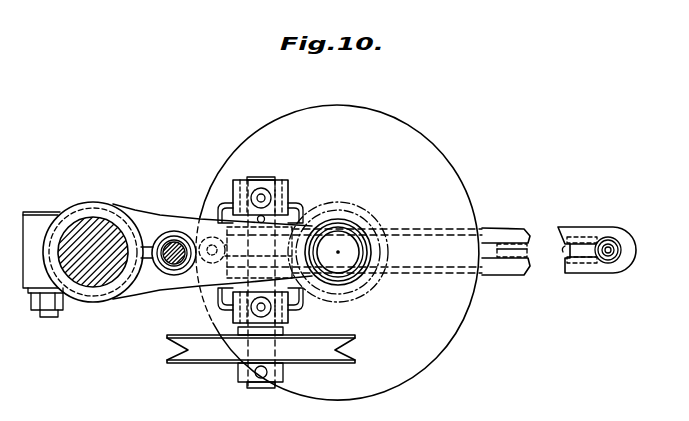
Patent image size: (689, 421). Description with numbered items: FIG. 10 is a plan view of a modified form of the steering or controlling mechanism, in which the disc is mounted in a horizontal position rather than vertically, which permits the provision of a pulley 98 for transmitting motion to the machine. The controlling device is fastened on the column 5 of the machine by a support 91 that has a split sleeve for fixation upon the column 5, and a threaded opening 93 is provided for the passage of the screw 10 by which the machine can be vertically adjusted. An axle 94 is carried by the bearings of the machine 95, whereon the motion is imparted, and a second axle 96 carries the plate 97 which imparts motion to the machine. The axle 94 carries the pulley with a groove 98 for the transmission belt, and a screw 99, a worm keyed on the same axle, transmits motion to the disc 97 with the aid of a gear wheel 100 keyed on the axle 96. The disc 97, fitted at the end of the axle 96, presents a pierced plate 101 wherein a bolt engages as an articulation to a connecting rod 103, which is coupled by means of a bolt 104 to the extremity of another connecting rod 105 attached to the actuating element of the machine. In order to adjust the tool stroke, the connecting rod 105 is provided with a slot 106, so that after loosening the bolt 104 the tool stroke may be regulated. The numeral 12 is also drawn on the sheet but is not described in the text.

The column 5 is at (88, 240).
The screw 10 is at (175, 262).
The clamp 12 is at (92, 297).
The support 91 is at (148, 222).
The threaded opening 93 is at (163, 268).
The axle 94 is at (265, 180).
The bearings of the machine 95 is at (290, 192).
The axle 96 is at (342, 243).
The plate 97 is at (453, 173).
The pulley with a groove 98 is at (202, 356).
The screw 99 is at (227, 233).
The gear wheel 100 is at (383, 223).
The pierced plate 101 is at (297, 284).
The connecting rod 103 is at (497, 263).
The bolt 104 is at (613, 278).
The connecting rod 105 is at (570, 231).
The slot 106 is at (562, 252).